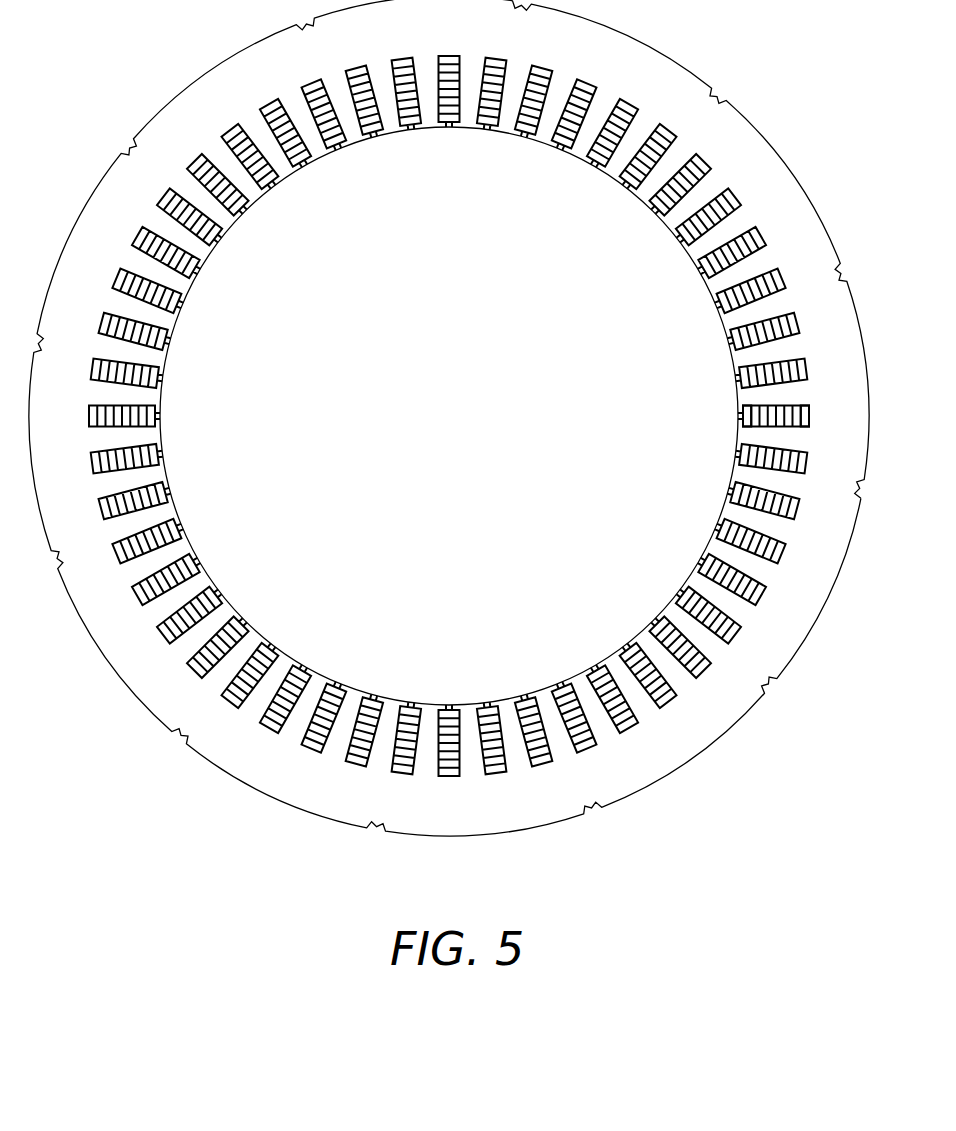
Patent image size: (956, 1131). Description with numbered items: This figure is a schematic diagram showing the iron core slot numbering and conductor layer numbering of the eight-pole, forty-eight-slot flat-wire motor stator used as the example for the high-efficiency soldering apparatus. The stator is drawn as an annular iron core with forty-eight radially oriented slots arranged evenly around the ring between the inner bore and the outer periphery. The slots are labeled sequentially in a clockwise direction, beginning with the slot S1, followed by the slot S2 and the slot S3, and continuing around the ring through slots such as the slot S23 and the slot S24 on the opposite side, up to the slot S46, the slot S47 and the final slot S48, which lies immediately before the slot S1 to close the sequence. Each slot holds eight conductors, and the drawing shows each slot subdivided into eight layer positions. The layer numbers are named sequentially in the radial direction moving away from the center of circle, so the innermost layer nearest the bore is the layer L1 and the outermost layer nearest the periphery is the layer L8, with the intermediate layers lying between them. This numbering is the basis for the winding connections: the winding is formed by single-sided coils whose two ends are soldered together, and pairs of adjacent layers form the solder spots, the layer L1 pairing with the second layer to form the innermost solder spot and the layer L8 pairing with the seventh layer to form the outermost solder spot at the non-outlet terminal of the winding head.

The iron core slot number S1 is at (360, 87).
The iron core slot number S2 is at (404, 79).
The iron core slot number S3 is at (448, 79).
The iron core slot number S23 is at (617, 706).
The iron core slot number S24 is at (578, 725).
The iron core slot number S46 is at (237, 141).
The iron core slot number S47 is at (274, 118).
The iron core slot number S48 is at (315, 100).
The conductor layer number L1 is at (742, 413).
The conductor layer number L8 is at (810, 406).